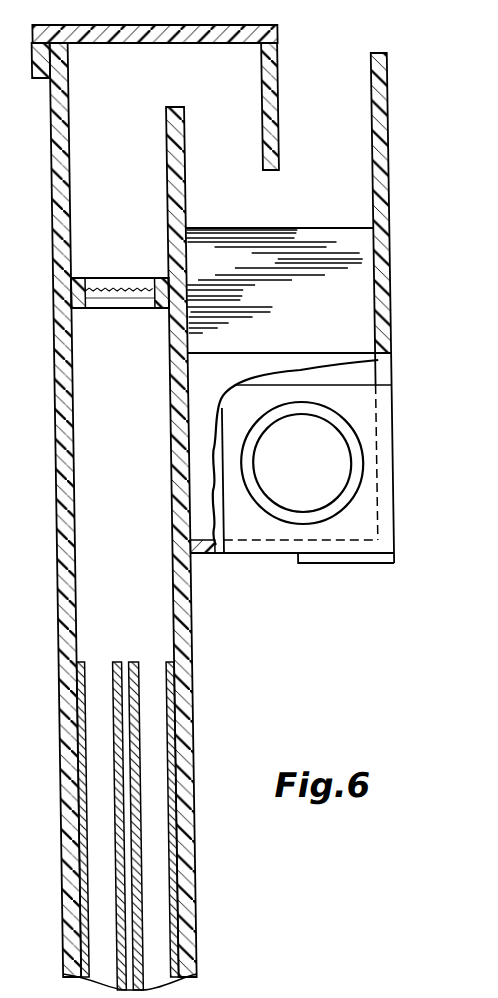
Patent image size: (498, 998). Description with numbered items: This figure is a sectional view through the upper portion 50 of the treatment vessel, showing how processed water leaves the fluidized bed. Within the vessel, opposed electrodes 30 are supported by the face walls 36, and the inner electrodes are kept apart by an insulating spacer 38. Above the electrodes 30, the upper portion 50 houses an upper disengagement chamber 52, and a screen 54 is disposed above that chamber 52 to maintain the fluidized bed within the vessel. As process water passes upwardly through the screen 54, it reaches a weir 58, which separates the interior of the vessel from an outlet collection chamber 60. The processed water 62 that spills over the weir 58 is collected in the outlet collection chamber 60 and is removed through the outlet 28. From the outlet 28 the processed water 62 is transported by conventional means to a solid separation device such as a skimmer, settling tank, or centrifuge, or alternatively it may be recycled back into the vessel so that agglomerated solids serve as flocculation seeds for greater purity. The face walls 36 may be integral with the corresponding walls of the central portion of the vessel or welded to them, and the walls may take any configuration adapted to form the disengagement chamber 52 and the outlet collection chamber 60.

The outlet 28 is at (349, 475).
The electrodes 30 is at (94, 680).
The face walls 36 is at (55, 796).
The insulating spacer 38 is at (119, 662).
The upper portion 50 is at (397, 257).
The upper disengagement chamber 52 is at (121, 456).
The screen 54 is at (123, 278).
The weir 58 is at (189, 128).
The outlet collection chamber 60 is at (276, 209).
The processed water 62 is at (313, 238).